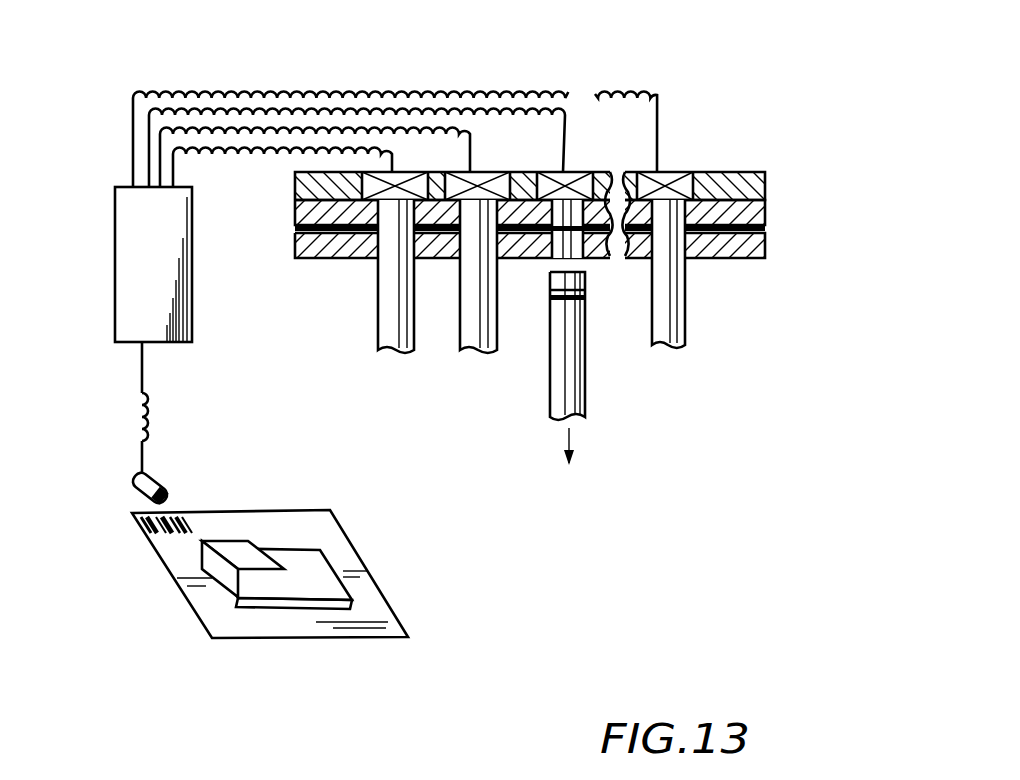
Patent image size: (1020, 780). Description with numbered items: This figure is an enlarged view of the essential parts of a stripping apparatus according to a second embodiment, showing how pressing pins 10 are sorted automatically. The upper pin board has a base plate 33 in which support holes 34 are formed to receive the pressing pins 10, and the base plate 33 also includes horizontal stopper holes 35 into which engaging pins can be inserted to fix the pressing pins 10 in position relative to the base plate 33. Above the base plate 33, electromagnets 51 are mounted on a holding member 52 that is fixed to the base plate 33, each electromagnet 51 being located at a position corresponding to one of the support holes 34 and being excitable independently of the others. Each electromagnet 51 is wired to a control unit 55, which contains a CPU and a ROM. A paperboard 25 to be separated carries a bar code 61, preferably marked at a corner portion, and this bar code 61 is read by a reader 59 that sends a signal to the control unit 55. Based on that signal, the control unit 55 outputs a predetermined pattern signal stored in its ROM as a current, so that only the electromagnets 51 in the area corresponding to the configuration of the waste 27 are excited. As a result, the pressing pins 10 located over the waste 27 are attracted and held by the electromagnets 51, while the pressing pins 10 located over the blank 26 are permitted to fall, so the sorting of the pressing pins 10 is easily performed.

The pressing pin 10 is at (473, 308).
The paperboard 25 is at (266, 611).
The blank 26 is at (368, 597).
The waste 27 is at (252, 583).
The base plate 33 is at (755, 243).
The support hole 34 is at (573, 250).
The stopper hole 35 is at (297, 230).
The electromagnet 51 is at (410, 177).
The holding member 52 is at (305, 185).
The control unit 55 is at (127, 272).
The reader 59 is at (164, 488).
The bar code 61 is at (147, 522).